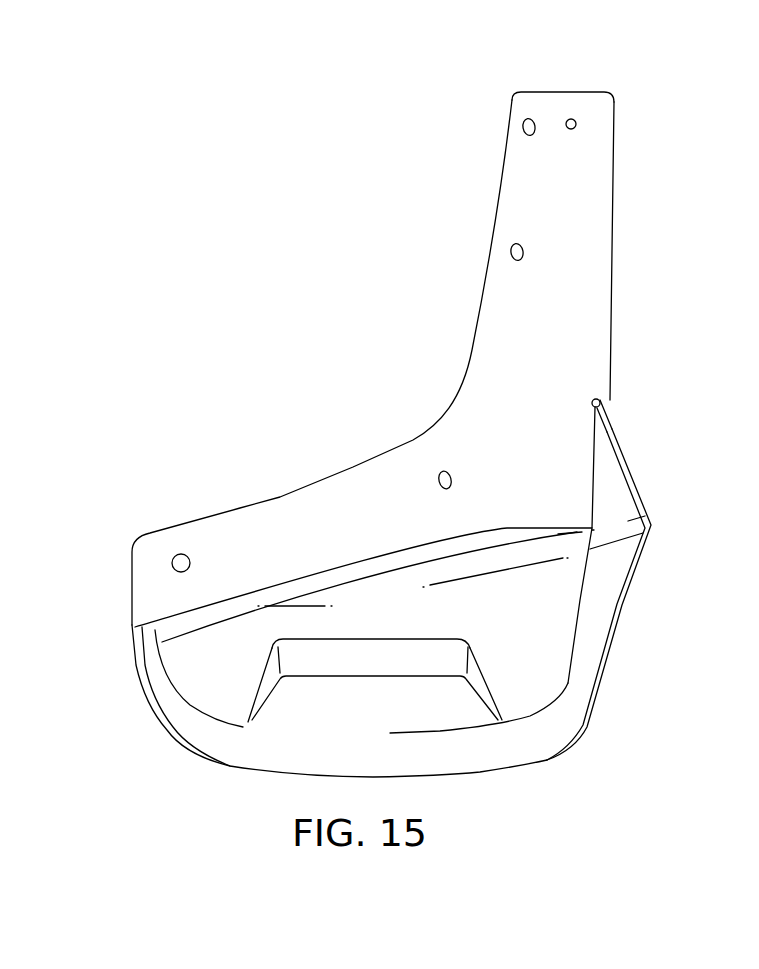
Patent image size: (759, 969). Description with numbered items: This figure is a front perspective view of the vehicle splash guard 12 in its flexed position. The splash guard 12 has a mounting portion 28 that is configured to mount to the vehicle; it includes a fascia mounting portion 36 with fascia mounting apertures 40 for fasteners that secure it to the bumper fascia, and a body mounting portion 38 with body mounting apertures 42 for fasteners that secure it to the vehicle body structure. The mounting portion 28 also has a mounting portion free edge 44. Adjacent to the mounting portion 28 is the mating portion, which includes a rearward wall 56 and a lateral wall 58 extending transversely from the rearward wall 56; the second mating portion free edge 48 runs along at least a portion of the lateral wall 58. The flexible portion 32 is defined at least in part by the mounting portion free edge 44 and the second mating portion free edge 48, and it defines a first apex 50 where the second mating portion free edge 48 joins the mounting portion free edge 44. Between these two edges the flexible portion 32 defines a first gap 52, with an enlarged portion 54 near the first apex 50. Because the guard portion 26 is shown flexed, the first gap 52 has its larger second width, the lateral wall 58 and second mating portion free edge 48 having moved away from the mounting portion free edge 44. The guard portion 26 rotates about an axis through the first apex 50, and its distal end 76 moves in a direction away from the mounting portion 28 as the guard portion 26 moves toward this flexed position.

The vehicle splash guard 12 is at (360, 230).
The guard portion 26 is at (183, 654).
The mounting portion 28 is at (473, 338).
The flexible portion 32 is at (655, 487).
The fascia mounting portion 36 is at (288, 522).
The body mounting portion 38 is at (527, 176).
The fascia mounting apertures 40 is at (441, 472).
The body mounting apertures 42 is at (522, 125).
The mounting portion free edge 44 is at (592, 477).
The second mating portion free edge 48 is at (628, 449).
The first apex 50 is at (592, 395).
The first gap 52 is at (616, 530).
The enlarged portion 54 is at (604, 403).
The rearward wall 56 is at (507, 528).
The lateral wall 58 is at (615, 186).
The distal end 76 is at (193, 732).